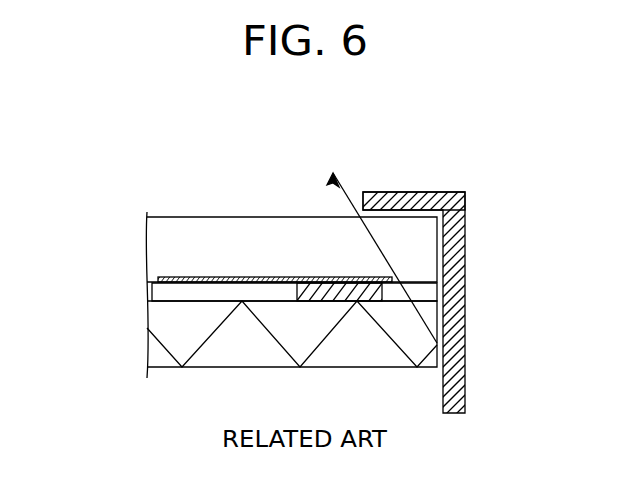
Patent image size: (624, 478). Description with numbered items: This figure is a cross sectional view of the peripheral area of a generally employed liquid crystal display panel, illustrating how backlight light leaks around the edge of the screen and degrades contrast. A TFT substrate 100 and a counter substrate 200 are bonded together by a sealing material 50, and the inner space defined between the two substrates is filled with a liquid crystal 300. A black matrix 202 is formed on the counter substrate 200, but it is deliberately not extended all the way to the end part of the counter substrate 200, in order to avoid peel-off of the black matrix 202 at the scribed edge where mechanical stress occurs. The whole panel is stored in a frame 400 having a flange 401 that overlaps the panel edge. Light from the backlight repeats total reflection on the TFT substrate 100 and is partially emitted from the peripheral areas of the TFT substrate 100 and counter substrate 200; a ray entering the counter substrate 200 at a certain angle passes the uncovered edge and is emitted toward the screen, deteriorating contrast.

The TFT substrate 100 is at (167, 320).
The counter substrate 200 is at (167, 242).
The black matrix 202 is at (220, 277).
The liquid crystal 300 is at (167, 290).
The sealing material 50 is at (335, 282).
The frame 400 is at (458, 235).
The flange 401 is at (407, 192).